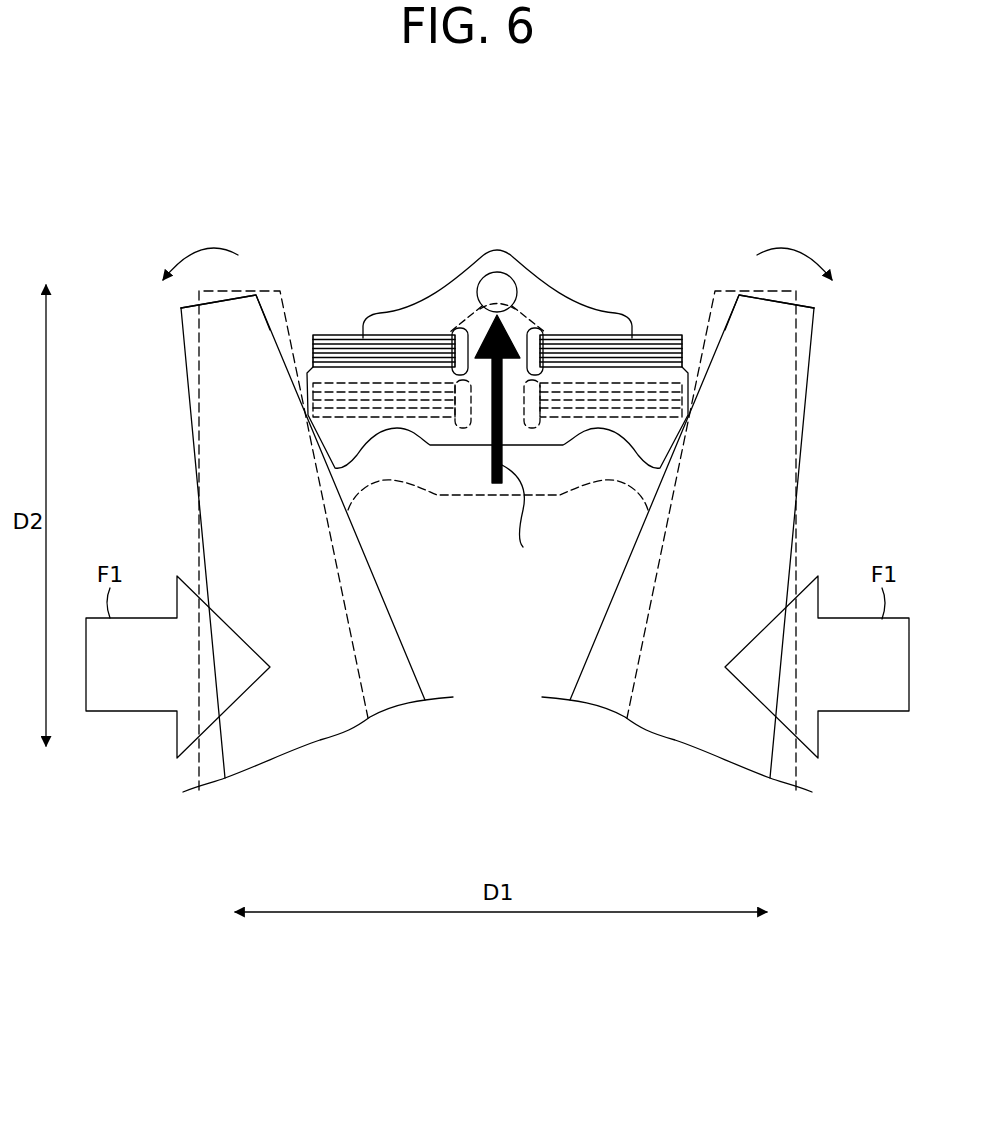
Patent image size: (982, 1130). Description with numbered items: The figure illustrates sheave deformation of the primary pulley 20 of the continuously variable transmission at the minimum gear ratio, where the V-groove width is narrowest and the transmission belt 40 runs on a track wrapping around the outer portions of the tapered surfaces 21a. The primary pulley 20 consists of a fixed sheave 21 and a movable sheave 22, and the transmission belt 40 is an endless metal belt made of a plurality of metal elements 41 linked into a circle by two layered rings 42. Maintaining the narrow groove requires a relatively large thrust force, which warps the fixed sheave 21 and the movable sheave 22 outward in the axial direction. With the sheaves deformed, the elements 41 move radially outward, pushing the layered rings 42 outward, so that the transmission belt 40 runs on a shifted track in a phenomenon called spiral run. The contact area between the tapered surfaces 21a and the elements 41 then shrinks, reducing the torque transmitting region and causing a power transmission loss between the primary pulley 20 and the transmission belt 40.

The primary pulley 20 is at (115, 232).
The fixed sheave 21 is at (819, 366).
The movable sheave 22 is at (178, 366).
The tapered surface 21a is at (290, 310).
The transmission belt 40 is at (440, 245).
The element 41 is at (537, 272).
The layered ring 42 is at (362, 385).